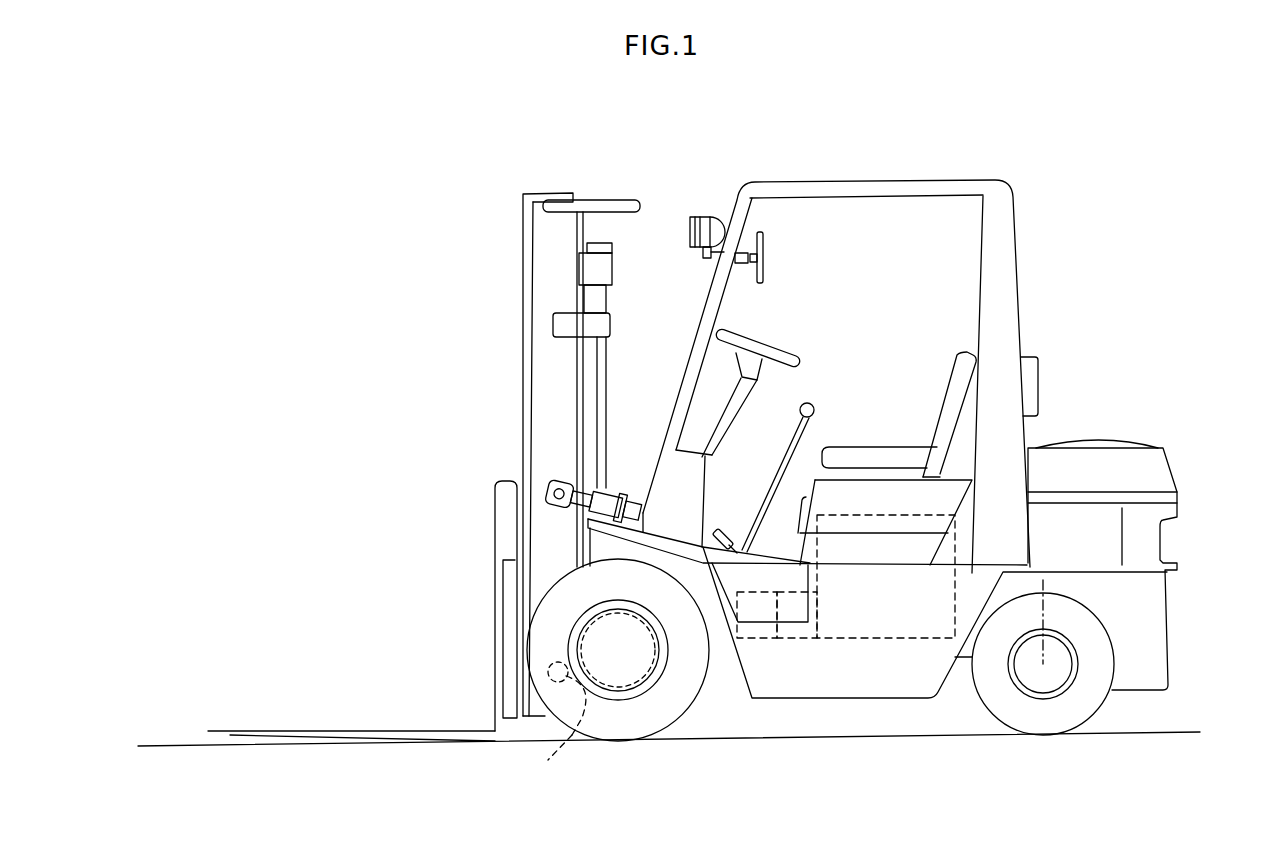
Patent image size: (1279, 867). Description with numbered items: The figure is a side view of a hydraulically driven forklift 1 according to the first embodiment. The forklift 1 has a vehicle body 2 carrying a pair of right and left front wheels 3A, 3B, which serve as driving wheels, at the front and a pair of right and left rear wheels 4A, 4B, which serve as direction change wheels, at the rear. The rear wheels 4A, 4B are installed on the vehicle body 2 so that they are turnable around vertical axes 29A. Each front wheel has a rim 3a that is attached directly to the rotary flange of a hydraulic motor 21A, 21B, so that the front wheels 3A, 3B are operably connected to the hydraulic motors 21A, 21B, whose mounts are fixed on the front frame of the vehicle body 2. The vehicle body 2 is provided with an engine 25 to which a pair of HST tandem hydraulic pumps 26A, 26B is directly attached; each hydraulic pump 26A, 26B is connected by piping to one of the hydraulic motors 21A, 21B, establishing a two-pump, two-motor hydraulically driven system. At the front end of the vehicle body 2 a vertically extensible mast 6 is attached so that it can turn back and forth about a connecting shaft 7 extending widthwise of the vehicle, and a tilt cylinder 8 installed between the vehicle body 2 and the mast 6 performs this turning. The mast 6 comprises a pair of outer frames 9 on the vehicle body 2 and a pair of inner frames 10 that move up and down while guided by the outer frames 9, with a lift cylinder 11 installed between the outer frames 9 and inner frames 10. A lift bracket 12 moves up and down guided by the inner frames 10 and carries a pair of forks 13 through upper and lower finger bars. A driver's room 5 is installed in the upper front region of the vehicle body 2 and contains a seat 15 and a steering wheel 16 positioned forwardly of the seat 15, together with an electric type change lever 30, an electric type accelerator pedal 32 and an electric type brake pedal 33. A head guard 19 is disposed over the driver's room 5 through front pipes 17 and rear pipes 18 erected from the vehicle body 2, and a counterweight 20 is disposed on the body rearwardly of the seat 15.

The forklift 1 is at (1095, 245).
The vehicle body 2 is at (764, 688).
The front wheel 3A is at (618, 687).
The front wheel 3B is at (606, 725).
The rim 3a is at (654, 684).
The rear wheel 4A is at (1054, 704).
The rear wheel 4B is at (1045, 737).
The driver's room 5 is at (843, 236).
The mast 6 is at (517, 333).
The connecting shaft 7 is at (548, 665).
The tilt cylinder 8 is at (636, 498).
The outer frames 9 is at (546, 413).
The inner frames 10 is at (519, 441).
The lift cylinder 11 is at (598, 357).
The lift bracket 12 is at (505, 578).
The forks 13 is at (398, 722).
The seat 15 is at (916, 448).
The steering wheel 16 is at (780, 356).
The front pipes 17 is at (712, 298).
The rear pipes 18 is at (993, 295).
The head guard 19 is at (920, 187).
The counterweight 20 is at (1078, 460).
The hydraulic motor 21A is at (502, 775).
The hydraulic motor 21B is at (548, 760).
The engine 25 is at (920, 645).
The hydraulic pump 26A is at (758, 640).
The hydraulic pump 26B is at (800, 640).
The vertical axis 29A is at (1155, 528).
The change lever 30 is at (813, 404).
The accelerator pedal 32 is at (806, 448).
The brake pedal 33 is at (742, 530).